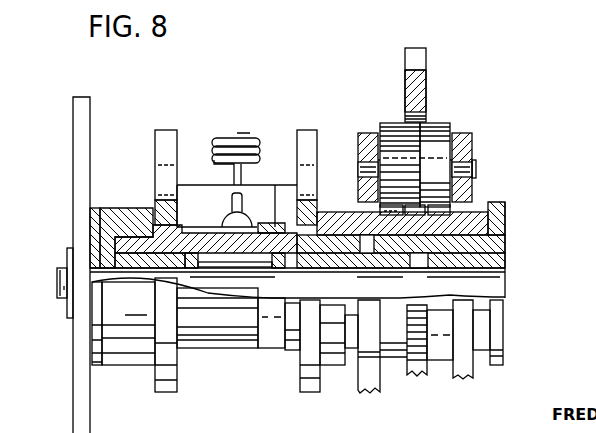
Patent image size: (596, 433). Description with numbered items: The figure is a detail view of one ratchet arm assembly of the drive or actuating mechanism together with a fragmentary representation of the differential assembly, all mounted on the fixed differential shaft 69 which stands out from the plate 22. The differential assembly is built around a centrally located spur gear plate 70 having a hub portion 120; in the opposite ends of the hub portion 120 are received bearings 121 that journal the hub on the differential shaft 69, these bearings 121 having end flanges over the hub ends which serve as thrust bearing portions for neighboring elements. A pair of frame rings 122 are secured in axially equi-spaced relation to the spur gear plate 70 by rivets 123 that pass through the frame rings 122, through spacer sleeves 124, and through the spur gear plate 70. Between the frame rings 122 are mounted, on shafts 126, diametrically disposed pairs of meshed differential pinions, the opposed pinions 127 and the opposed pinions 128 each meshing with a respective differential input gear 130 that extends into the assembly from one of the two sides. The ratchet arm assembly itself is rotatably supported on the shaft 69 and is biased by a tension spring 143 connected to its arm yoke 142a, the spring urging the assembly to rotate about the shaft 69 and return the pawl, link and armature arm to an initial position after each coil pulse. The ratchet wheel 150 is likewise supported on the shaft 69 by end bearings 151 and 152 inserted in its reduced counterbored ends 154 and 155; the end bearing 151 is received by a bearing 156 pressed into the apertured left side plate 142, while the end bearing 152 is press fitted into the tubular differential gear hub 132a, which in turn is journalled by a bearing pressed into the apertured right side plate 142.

The plate 22 is at (76, 125).
The differential shaft 69 is at (497, 280).
The spur gear plate 70 is at (432, 48).
The hub portion 120 is at (478, 222).
The bearings 121 is at (492, 243).
The frame rings 122 is at (367, 133).
The rivets 123 is at (478, 322).
The spacer sleeves 124 is at (438, 355).
The shafts 126 is at (475, 163).
The differential pinions 127 is at (393, 122).
The differential pinions 128 is at (440, 122).
The differential input gears 130 is at (395, 210).
The tubular differential gear hub 132a is at (276, 196).
The side plate 142 is at (163, 130).
The arm yoke 142a is at (200, 185).
The tension spring 143 is at (258, 137).
The ratchet wheel 150 is at (218, 347).
The end bearing 151 is at (120, 243).
The end bearing 152 is at (332, 262).
The reduced counterbored end 154 is at (122, 240).
The reduced counterbored end 155 is at (298, 265).
The bearing 156 is at (133, 208).